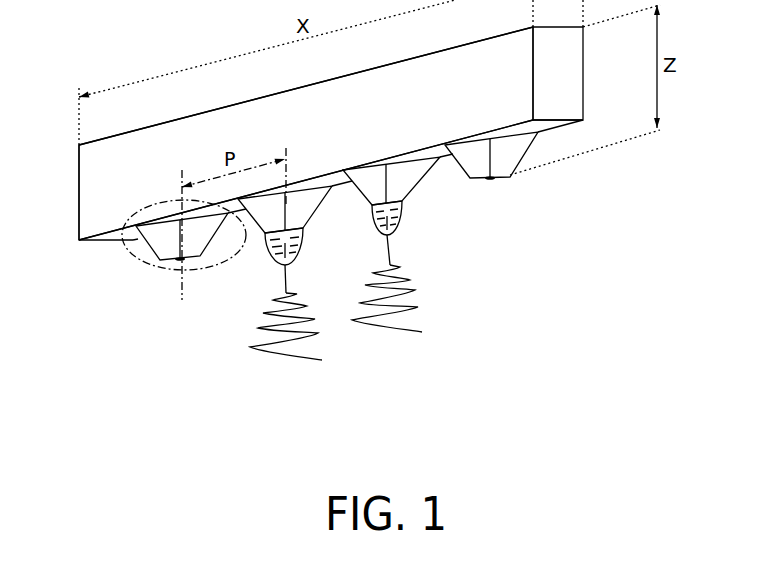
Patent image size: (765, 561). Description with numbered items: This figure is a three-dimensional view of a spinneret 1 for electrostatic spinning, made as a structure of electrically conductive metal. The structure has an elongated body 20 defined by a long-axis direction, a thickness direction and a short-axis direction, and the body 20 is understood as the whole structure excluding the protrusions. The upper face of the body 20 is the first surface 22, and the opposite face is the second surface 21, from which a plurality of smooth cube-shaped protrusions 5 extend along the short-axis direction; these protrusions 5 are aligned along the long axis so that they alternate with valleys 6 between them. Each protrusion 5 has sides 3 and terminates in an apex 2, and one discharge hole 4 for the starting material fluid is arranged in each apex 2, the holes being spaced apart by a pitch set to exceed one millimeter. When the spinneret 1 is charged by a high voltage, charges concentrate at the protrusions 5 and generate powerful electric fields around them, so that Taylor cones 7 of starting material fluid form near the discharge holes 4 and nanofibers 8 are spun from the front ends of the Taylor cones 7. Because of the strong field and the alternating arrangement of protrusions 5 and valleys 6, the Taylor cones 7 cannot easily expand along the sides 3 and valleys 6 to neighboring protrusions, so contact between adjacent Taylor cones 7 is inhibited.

The spinneret for electrostatic spinning 1 is at (78, 244).
The apex 2 is at (485, 180).
The sides 3 is at (410, 183).
The discharge hole 4 is at (492, 180).
The protrusion 5 is at (150, 265).
The valley 6 is at (437, 155).
The Taylor cone 7 is at (402, 221).
The nanofiber 8 is at (387, 330).
The body 20 is at (73, 148).
The second surface 21 is at (110, 240).
The first surface 22 is at (371, 68).